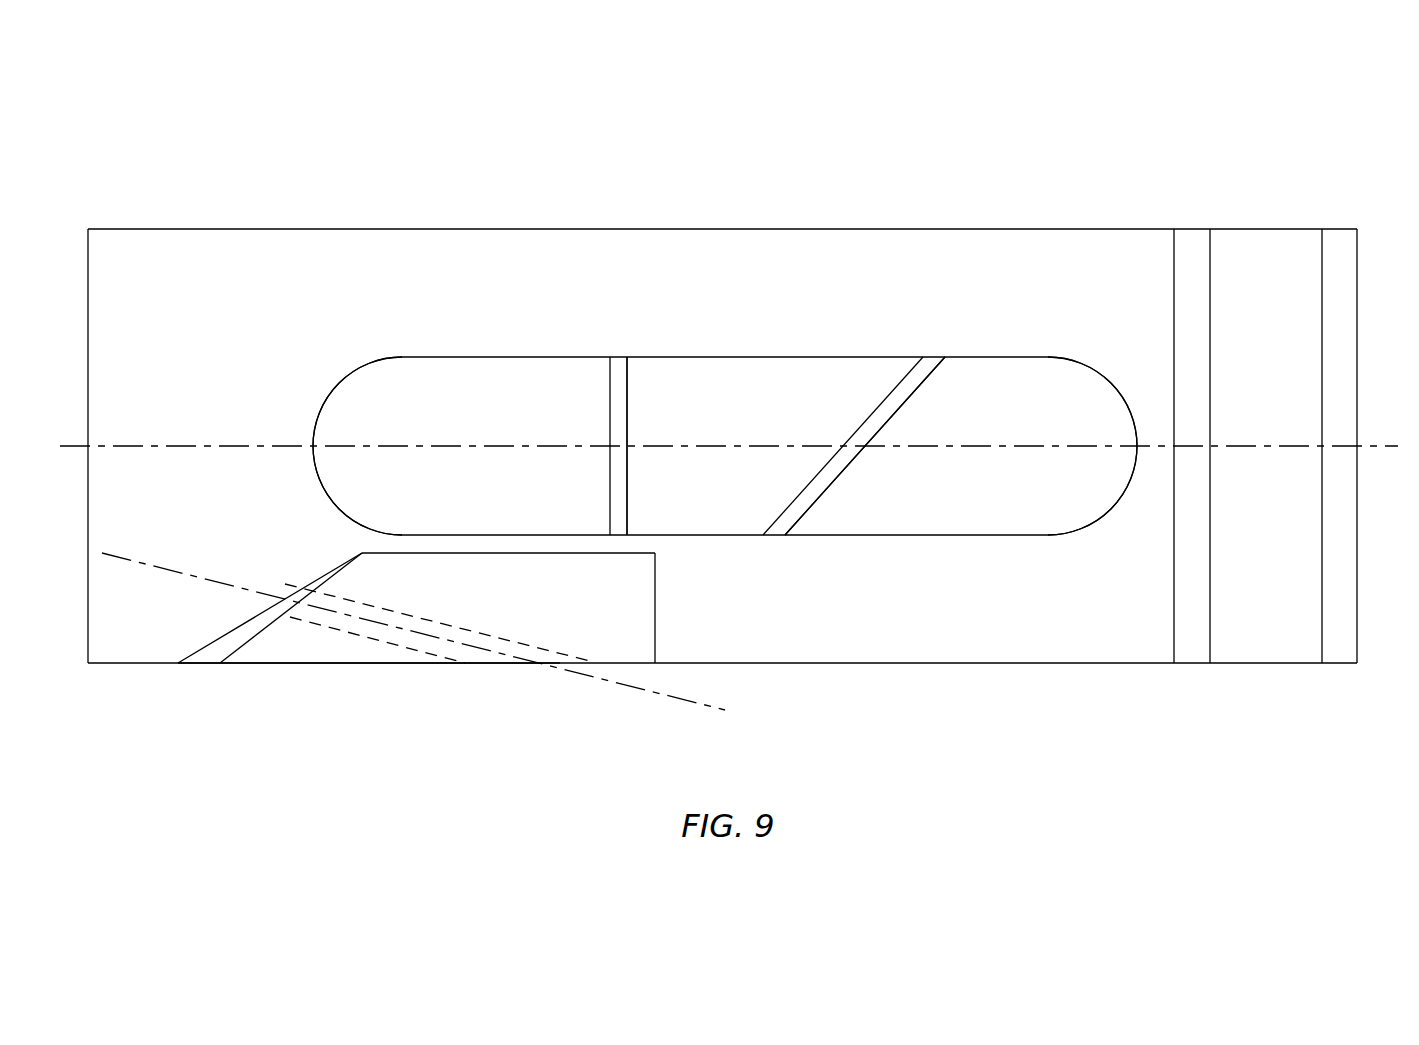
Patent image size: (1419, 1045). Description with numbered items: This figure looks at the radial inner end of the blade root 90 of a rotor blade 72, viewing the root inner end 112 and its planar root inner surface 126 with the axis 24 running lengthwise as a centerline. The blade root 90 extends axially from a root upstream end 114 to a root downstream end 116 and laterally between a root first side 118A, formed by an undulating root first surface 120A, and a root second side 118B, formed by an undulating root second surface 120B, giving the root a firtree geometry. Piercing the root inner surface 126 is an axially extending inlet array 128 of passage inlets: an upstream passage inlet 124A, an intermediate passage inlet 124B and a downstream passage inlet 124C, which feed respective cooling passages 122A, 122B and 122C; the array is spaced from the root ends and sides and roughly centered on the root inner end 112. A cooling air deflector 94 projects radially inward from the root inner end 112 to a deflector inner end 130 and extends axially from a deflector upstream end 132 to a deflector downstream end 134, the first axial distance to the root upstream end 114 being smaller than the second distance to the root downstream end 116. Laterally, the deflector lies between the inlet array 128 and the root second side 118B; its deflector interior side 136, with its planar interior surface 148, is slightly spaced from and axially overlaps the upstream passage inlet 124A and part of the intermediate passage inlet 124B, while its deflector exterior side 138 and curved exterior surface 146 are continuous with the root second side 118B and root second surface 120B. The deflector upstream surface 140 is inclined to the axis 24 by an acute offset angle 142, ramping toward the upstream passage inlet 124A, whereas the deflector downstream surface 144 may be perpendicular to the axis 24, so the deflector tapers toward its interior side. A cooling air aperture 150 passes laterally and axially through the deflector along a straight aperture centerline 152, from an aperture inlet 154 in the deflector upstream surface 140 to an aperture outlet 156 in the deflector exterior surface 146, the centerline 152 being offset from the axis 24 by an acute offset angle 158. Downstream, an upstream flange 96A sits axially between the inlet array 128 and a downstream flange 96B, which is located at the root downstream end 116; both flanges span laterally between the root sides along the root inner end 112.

The rotor blade 72 is at (721, 435).
The blade root 90 is at (721, 457).
The cooling air deflector 94 is at (353, 672).
The upstream flange 96A is at (1190, 668).
The downstream flange 96B is at (1337, 668).
The axial upstream end of the blade root 114 is at (88, 263).
The axial downstream end of the blade root 116 is at (1357, 288).
The root first side 118A is at (722, 185).
The root first surface 120A is at (363, 229).
The root second side 118B is at (722, 703).
The root second surface 120B is at (866, 663).
The axis 24 is at (1383, 450).
The root inner end 112 is at (677, 407).
The root inner surface 126 is at (677, 407).
The inlet array 128 is at (432, 307).
The upstream cooling passage 122A is at (470, 411).
The intermediate cooling passage 122B is at (786, 411).
The downstream cooling passage 122C is at (961, 411).
The upstream passage inlet 124A is at (572, 376).
The intermediate passage inlet 124B is at (842, 377).
The downstream passage inlet 124C is at (1015, 377).
The deflector inner end 130 is at (538, 522).
The deflector interior side 136 is at (538, 522).
The deflector interior surface 148 is at (600, 553).
The deflector downstream end 134 is at (734, 608).
The deflector downstream surface 144 is at (655, 608).
The deflector exterior side 138 is at (473, 608).
The deflector exterior surface 146 is at (582, 620).
The deflector upstream end 132 is at (227, 594).
The deflector upstream surface 140 is at (227, 594).
The aperture inlet 154 is at (232, 645).
The offset angle 142 is at (286, 448).
The offset angle 158 is at (164, 448).
The cooling air aperture 150 is at (450, 626).
The aperture centerline 152 is at (434, 663).
The aperture outlet 156 is at (492, 663).